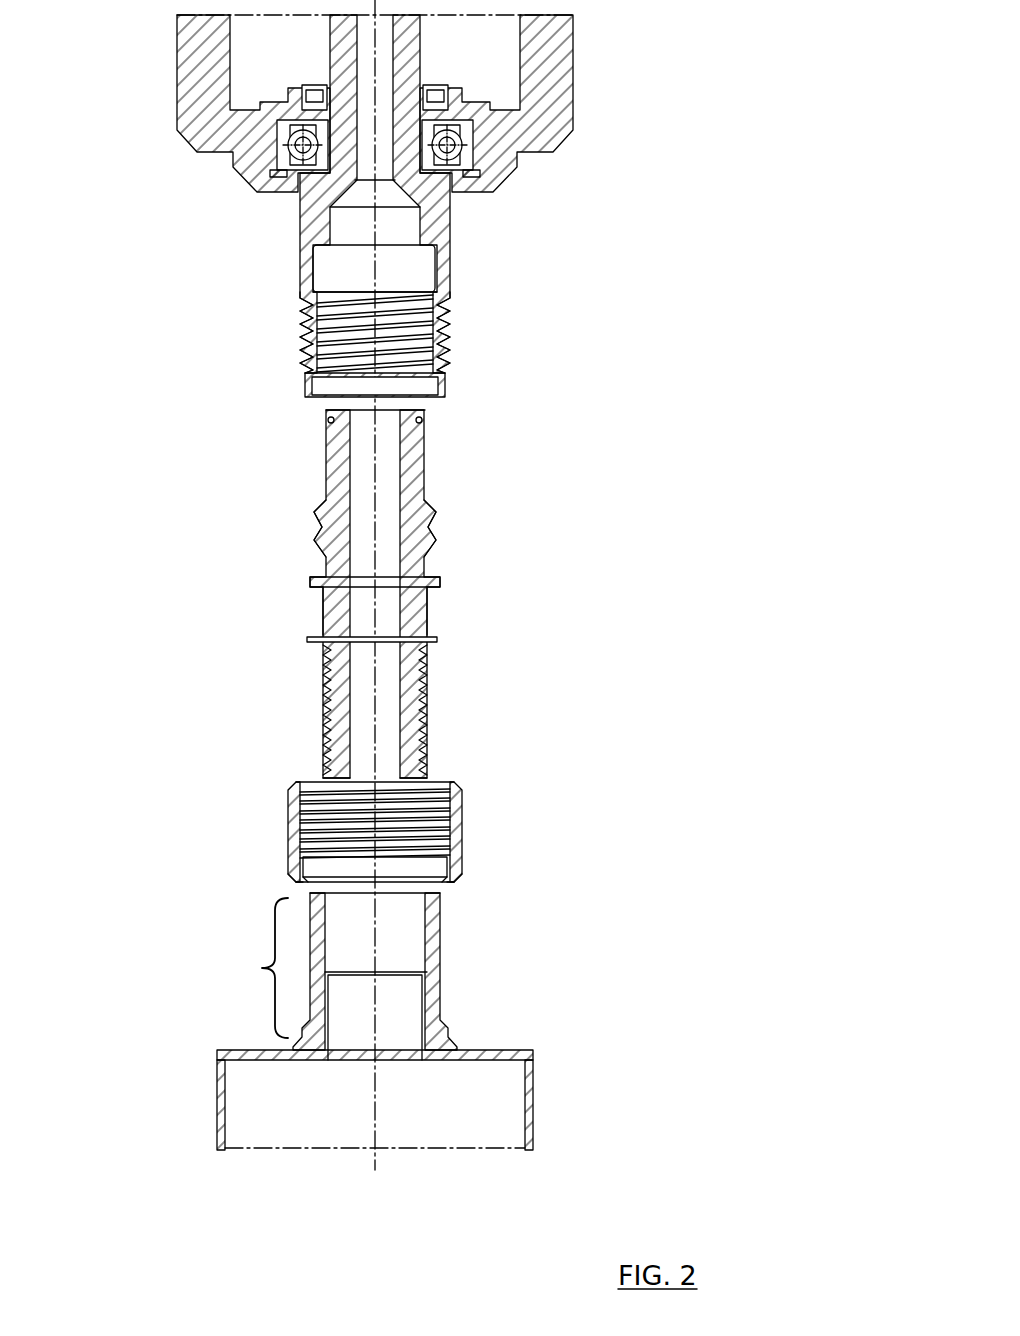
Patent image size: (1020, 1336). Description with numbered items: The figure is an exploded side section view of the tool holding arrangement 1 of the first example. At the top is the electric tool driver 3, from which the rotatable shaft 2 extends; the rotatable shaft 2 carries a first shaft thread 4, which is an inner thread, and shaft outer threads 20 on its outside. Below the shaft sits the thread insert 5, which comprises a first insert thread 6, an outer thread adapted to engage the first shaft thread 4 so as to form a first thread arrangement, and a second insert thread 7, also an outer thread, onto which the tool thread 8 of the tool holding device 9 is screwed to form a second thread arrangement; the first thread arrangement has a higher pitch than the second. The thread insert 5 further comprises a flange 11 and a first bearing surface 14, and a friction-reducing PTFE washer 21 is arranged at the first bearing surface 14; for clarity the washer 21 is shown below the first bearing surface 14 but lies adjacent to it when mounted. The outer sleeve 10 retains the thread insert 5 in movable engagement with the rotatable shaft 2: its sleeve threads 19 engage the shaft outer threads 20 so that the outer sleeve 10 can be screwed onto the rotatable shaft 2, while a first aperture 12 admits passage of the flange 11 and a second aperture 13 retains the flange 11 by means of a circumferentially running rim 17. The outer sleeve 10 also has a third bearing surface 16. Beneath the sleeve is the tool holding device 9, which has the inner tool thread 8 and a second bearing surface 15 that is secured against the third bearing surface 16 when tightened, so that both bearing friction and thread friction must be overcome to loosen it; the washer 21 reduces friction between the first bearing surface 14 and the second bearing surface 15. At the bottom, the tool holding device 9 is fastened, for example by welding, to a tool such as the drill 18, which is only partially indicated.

The tool holding arrangement 1 is at (437, 585).
The rotatable shaft 2 is at (440, 212).
The electric tool driver 3 is at (540, 75).
The first shaft thread 4 is at (432, 323).
The thread insert 5 is at (390, 585).
The first insert thread 6 is at (436, 522).
The second insert thread 7 is at (428, 703).
The tool thread 8 is at (424, 995).
The tool holding device 9 is at (342, 971).
The outer sleeve 10 is at (455, 858).
The flange 11 is at (315, 587).
The first aperture 12 is at (363, 780).
The second aperture 13 is at (371, 876).
The first bearing surface 14 is at (317, 604).
The second bearing surface 15 is at (313, 888).
The third bearing surface 16 is at (445, 888).
The circumferentially running rim 17 is at (443, 891).
The drill 18 is at (482, 1090).
The sleeve threads 19 is at (450, 815).
The shaft outer threads 20 is at (300, 333).
The washer 21 is at (400, 640).